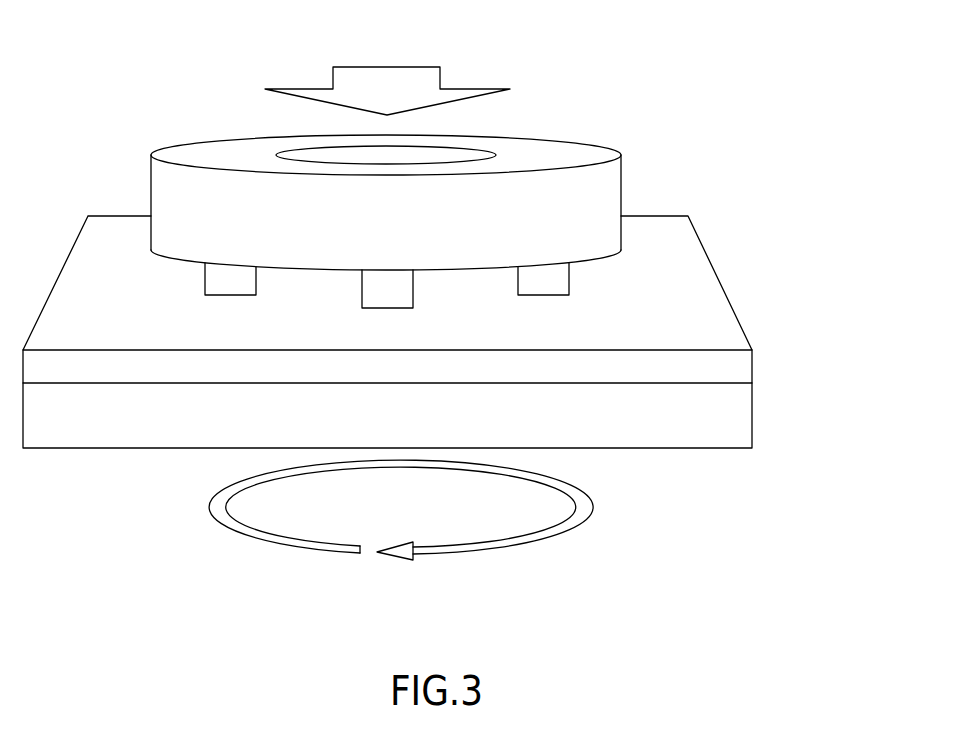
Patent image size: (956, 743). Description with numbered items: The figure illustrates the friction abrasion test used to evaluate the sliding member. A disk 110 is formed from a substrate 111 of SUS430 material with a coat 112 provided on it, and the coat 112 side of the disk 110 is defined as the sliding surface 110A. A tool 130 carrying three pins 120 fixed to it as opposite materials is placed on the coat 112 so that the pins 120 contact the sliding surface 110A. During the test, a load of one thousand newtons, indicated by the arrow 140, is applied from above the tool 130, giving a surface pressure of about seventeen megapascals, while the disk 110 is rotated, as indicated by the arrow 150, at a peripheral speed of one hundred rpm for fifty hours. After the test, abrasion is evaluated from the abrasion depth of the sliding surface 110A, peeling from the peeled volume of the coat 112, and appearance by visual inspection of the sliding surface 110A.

The disk 110 is at (436, 332).
The sliding surface 110A is at (693, 292).
The substrate 111 is at (753, 423).
The coat 112 is at (753, 365).
The pins 120 is at (205, 280).
The tool 130 is at (622, 180).
The arrow indicating load 140 is at (442, 78).
The arrow indicating rotation 150 is at (560, 534).